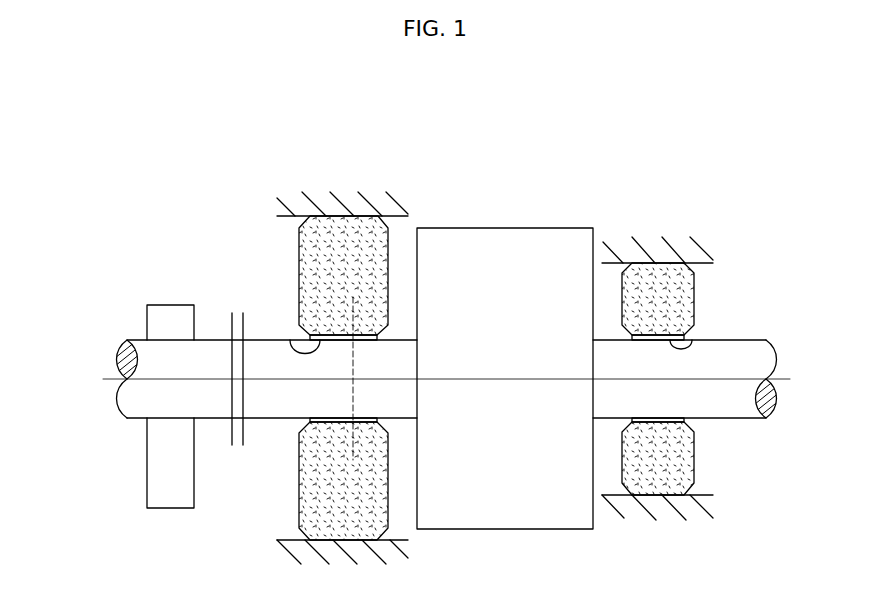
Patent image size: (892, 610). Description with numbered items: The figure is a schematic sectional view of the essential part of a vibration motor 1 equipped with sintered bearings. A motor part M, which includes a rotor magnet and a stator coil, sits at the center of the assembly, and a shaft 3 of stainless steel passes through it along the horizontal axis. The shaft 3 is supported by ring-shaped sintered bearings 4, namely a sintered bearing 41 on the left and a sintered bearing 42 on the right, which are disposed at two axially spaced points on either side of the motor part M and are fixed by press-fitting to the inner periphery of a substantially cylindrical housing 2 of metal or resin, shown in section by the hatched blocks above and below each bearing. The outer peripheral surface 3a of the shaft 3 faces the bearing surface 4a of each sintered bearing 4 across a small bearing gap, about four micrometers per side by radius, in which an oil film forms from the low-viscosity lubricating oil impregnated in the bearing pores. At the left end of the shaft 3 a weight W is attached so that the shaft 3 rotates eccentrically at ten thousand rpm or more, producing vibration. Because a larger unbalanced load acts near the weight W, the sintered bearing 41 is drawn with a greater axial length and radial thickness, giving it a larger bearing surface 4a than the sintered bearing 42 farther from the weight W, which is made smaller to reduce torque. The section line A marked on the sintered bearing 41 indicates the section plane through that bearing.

The vibration motor 1 is at (741, 183).
The housing 2 is at (307, 186).
The shaft 3 is at (150, 397).
The outer peripheral surface 3a is at (265, 420).
The sintered bearing 4 is at (449, 361).
The sintered bearing 41 is at (315, 248).
The sintered bearing 42 is at (648, 268).
The bearing surface 4a is at (290, 341).
The weight W is at (154, 303).
The motor part M is at (512, 418).
The section line A is at (366, 308).